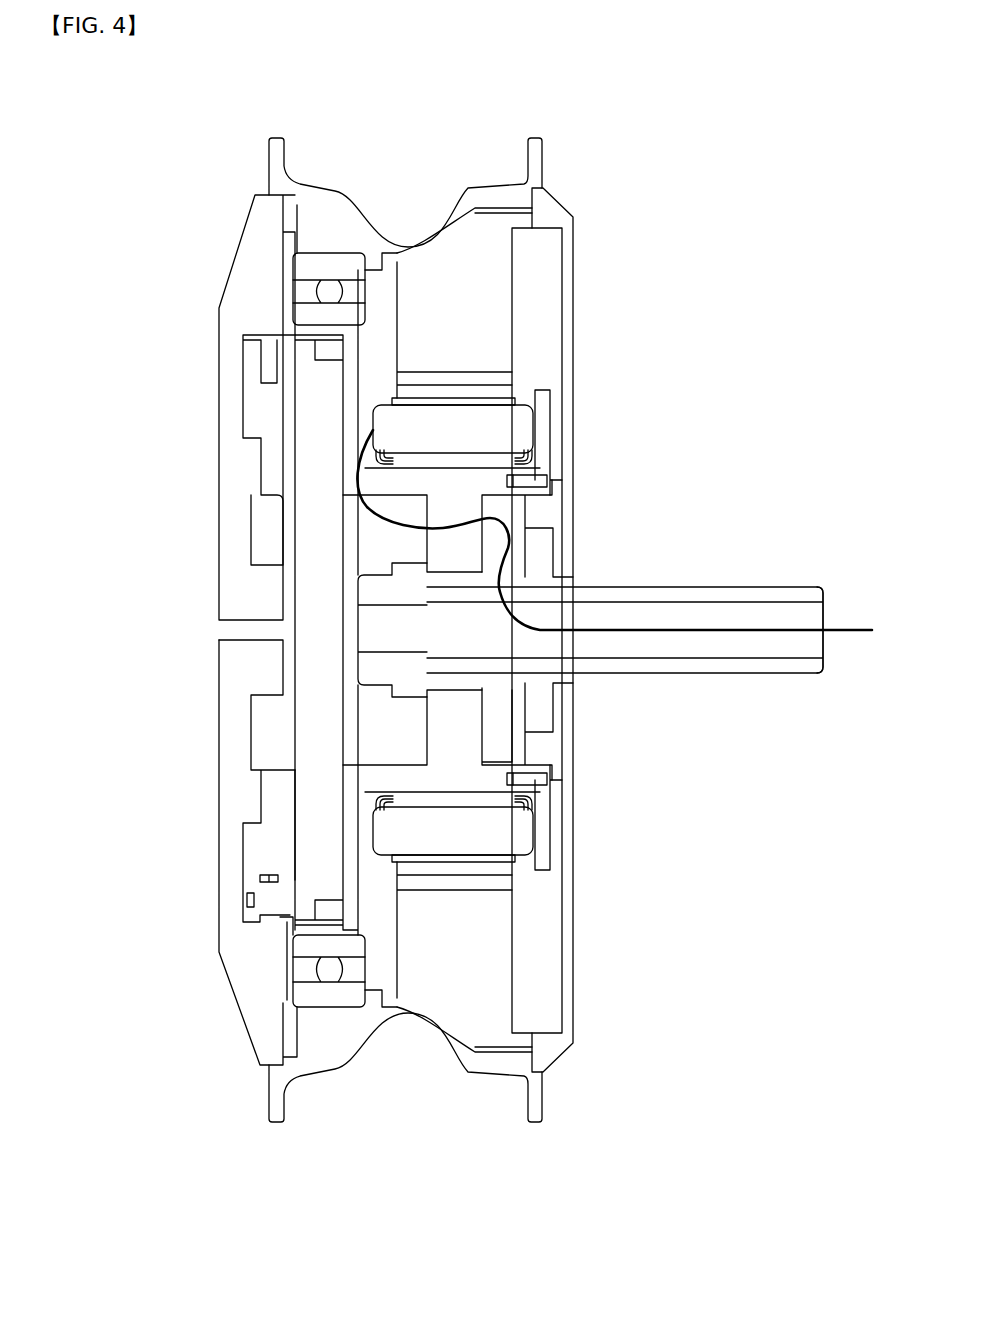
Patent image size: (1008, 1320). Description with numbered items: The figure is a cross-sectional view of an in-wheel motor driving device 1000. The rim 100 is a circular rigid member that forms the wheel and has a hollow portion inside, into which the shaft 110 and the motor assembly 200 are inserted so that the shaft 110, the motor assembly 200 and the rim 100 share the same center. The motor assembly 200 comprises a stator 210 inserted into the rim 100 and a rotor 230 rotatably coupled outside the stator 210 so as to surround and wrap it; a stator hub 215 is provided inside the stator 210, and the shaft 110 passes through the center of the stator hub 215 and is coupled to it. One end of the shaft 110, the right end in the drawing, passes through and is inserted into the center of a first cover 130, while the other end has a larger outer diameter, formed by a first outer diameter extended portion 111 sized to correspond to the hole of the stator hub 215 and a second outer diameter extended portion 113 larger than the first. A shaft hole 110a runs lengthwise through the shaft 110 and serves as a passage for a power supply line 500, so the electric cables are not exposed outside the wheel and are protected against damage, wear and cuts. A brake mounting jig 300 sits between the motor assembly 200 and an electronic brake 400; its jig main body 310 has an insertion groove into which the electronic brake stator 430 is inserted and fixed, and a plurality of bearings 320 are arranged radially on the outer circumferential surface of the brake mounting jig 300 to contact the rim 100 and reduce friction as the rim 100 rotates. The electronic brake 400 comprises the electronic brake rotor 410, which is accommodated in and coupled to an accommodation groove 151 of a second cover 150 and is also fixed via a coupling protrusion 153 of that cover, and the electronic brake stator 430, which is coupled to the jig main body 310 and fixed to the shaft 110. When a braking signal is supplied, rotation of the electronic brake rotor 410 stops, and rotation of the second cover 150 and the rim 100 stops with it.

The in-wheel motor driving device 1000 is at (195, 97).
The rim 100 is at (492, 183).
The shaft 110 is at (752, 592).
The shaft hole 110a is at (757, 647).
The first outer diameter extended portion 111 is at (492, 681).
The second outer diameter extended portion 113 is at (445, 705).
The first cover 130 is at (565, 541).
The second cover 150 is at (219, 537).
The accommodation groove 151 is at (243, 871).
The coupling protrusion 153 is at (275, 665).
The motor assembly 200 is at (680, 322).
The stator 210 is at (512, 428).
The stator hub 215 is at (457, 510).
The rotor 230 is at (497, 380).
The brake mounting jig 300 is at (134, 268).
The jig main body 310 is at (353, 368).
The bearings 320 is at (323, 291).
The electronic brake 400 is at (448, 1188).
The electronic brake rotor 410 is at (272, 802).
The electronic brake stator 430 is at (318, 843).
The power supply line 500 is at (842, 628).